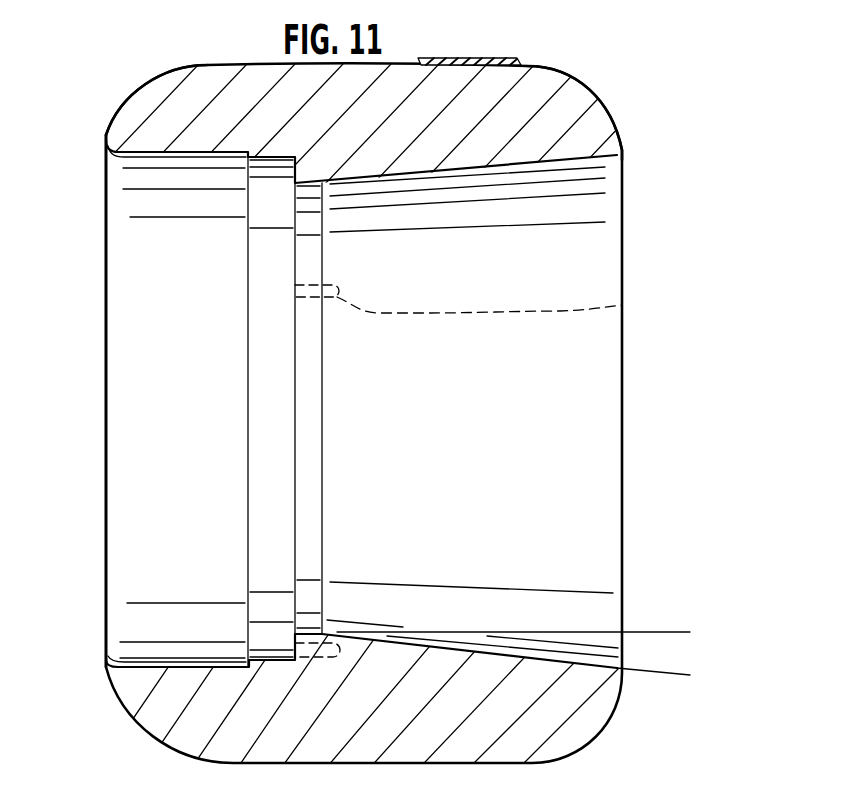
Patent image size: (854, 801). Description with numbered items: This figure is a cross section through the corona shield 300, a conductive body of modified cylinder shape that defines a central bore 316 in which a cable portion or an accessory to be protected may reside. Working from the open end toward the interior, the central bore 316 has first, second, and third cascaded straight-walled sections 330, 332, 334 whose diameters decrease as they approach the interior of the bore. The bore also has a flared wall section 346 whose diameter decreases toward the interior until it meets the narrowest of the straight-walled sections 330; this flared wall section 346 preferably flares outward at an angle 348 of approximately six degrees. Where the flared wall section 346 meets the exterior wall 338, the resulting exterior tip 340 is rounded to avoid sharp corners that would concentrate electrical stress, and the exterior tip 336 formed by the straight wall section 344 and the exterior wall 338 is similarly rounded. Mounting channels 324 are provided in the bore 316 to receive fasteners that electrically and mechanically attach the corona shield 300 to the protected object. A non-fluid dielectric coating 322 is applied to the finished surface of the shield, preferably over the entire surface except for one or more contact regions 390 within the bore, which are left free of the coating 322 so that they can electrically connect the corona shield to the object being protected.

The corona shield 300 is at (626, 100).
The central bore 316 is at (442, 495).
The dielectric coating 322 is at (488, 60).
The mounting channels 324 is at (612, 305).
The first straight-walled section 330 is at (303, 318).
The second straight-walled section 332 is at (267, 377).
The third straight-walled section 334 is at (222, 465).
The exterior tip 336 is at (107, 130).
The exterior wall 338 is at (207, 66).
The exterior tip 340 is at (622, 158).
The straight wall section 344 is at (170, 153).
The flared wall section 346 is at (508, 160).
The angle 348 is at (657, 708).
The contact regions 390 is at (313, 190).